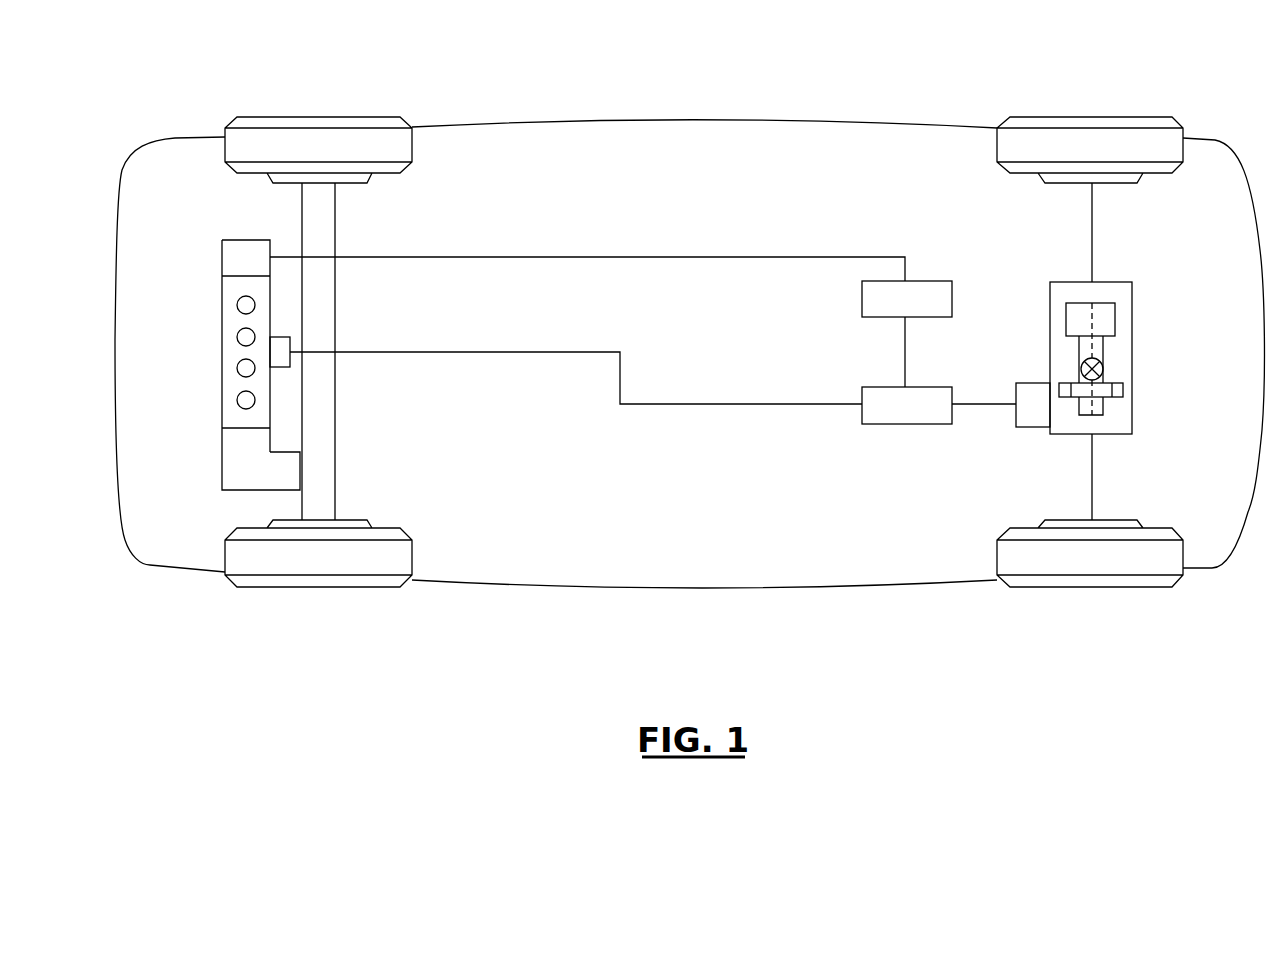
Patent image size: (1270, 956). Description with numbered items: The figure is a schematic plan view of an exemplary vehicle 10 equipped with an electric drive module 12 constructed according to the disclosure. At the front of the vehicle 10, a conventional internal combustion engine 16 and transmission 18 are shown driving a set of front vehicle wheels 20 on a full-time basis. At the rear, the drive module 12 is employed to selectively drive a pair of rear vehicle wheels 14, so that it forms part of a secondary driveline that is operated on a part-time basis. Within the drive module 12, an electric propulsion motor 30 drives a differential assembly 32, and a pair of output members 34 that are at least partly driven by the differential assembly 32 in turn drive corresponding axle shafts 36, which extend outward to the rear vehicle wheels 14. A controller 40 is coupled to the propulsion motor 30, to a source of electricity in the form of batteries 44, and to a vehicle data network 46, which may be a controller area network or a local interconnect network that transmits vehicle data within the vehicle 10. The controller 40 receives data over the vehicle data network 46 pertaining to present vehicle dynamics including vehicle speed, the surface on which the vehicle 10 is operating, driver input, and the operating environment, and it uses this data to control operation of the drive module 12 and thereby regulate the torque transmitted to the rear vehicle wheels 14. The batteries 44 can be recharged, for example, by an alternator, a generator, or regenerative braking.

The vehicle 10 is at (664, 63).
The electric drive module 12 is at (1143, 335).
The rear vehicle wheels 14 is at (1095, 117).
The internal combustion engine 16 is at (222, 310).
The transmission 18 is at (222, 462).
The front vehicle wheels 20 is at (325, 117).
The electric propulsion motor 30 is at (1030, 420).
The differential assembly 32 is at (1104, 367).
The output members 34 is at (1105, 315).
The axle shafts 36 is at (1092, 200).
The controller 40 is at (905, 424).
The batteries 44 is at (930, 281).
The vehicle data network 46 is at (645, 405).